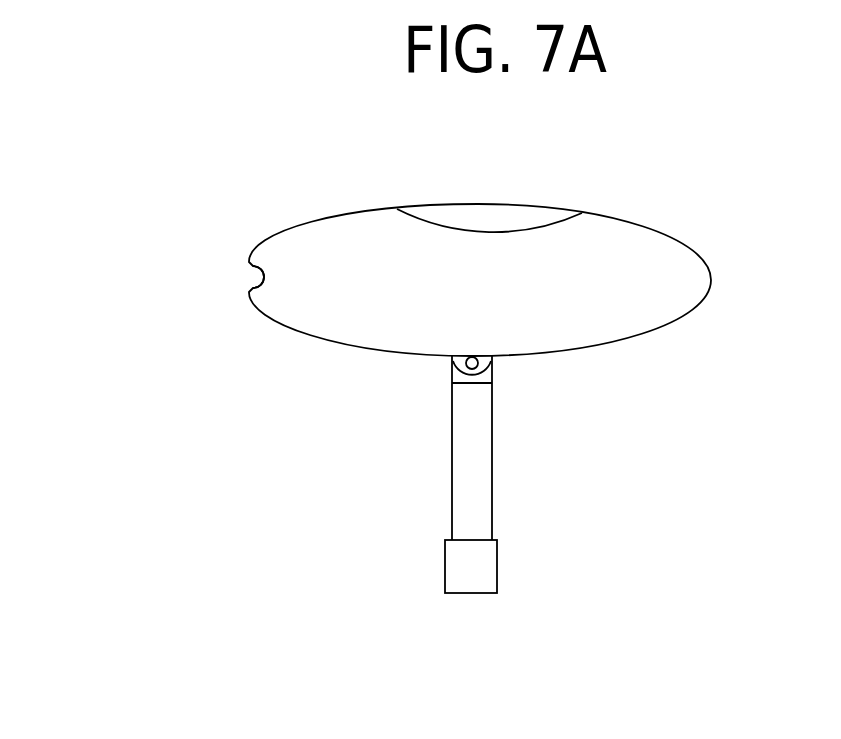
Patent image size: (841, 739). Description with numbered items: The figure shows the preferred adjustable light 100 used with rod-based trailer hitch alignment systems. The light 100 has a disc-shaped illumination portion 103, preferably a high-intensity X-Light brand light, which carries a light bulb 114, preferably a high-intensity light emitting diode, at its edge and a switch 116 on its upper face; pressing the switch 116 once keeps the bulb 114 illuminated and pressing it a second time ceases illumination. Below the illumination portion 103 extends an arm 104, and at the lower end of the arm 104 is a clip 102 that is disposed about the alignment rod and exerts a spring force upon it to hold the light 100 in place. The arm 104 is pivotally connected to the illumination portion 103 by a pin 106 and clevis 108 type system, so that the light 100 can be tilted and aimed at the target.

The adjustable light 100 is at (328, 528).
The clip 102 is at (480, 567).
The illumination portion 103 is at (618, 365).
The arm 104 is at (480, 498).
The pin 106 is at (476, 368).
The clevis 108 is at (463, 358).
The light bulb 114 is at (258, 277).
The switch 116 is at (563, 216).